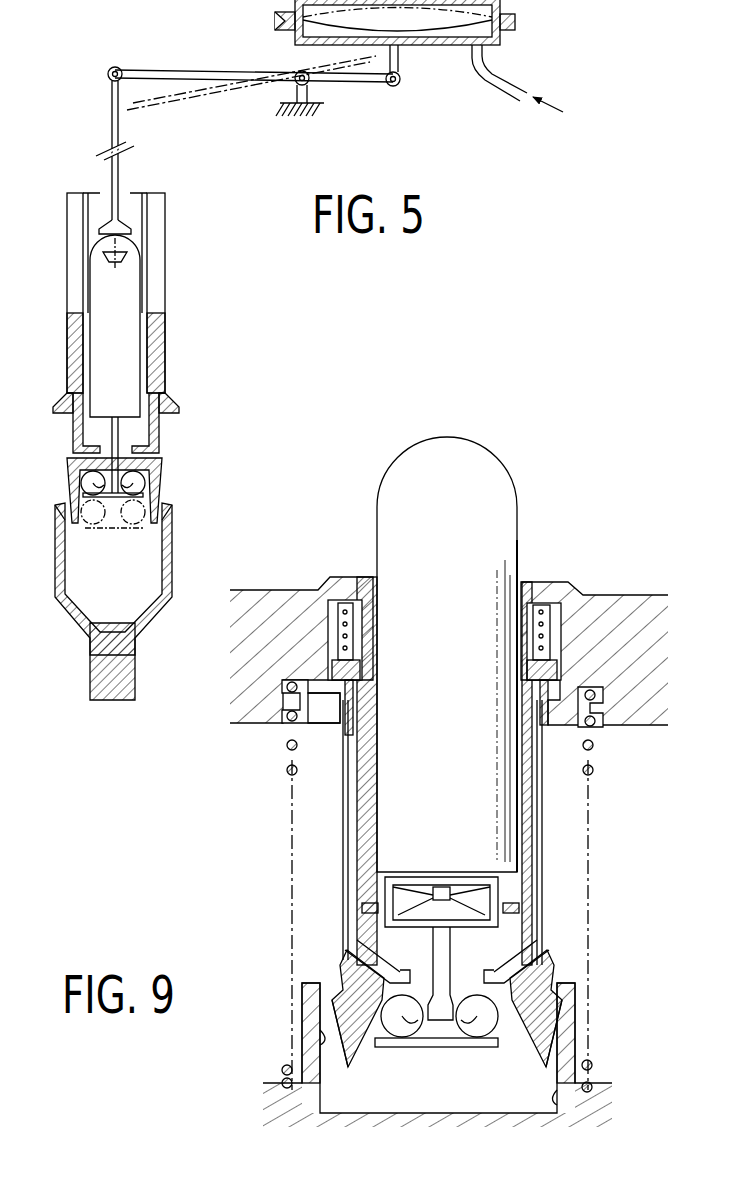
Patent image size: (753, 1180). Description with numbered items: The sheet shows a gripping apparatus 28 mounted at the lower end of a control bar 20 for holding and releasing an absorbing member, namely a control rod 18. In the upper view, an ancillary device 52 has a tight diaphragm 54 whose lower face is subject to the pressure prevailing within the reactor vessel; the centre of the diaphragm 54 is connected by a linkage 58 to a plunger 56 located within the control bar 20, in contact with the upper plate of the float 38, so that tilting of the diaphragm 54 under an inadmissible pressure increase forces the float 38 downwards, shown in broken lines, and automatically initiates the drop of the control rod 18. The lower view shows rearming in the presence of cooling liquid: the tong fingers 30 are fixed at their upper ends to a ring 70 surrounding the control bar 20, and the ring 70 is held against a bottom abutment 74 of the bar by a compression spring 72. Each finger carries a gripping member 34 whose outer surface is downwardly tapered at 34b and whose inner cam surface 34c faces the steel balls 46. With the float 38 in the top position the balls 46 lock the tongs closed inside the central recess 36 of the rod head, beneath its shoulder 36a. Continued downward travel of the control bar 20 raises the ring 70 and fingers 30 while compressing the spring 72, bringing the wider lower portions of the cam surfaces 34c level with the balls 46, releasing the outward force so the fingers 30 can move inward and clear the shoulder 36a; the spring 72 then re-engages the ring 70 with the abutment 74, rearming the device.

In FIG. 5, the control rod 18 is at (100, 678).
In FIG. 9, the control rod 18 is at (568, 1050).
In FIG. 5, the control bar 20 is at (155, 228).
In FIG. 9, the control bar 20 is at (523, 578).
In FIG. 5, the apparatus 28 is at (172, 446).
In FIG. 9, the fingers 30 is at (545, 836).
In FIG. 9, the gripping member 34 is at (355, 1000).
In FIG. 9, the downwardly tapered outer surface 34b is at (556, 1010).
In FIG. 9, the cam surface 34c is at (350, 1075).
In FIG. 9, the central recess 36 is at (560, 1098).
In FIG. 9, the shoulder 36a is at (322, 1040).
In FIG. 5, the float 38 is at (125, 305).
In FIG. 9, the float 38 is at (492, 497).
In FIG. 9, the balls 46 is at (475, 1025).
In FIG. 5, the ancillary device 52 is at (503, 5).
In FIG. 5, the diaphragm 54 is at (462, 45).
In FIG. 5, the plunger 56 is at (118, 180).
In FIG. 5, the linkage 58 is at (152, 72).
In FIG. 9, the ring 70 is at (545, 672).
In FIG. 9, the compression spring 72 is at (345, 605).
In FIG. 9, the bottom abutment 74 is at (318, 700).